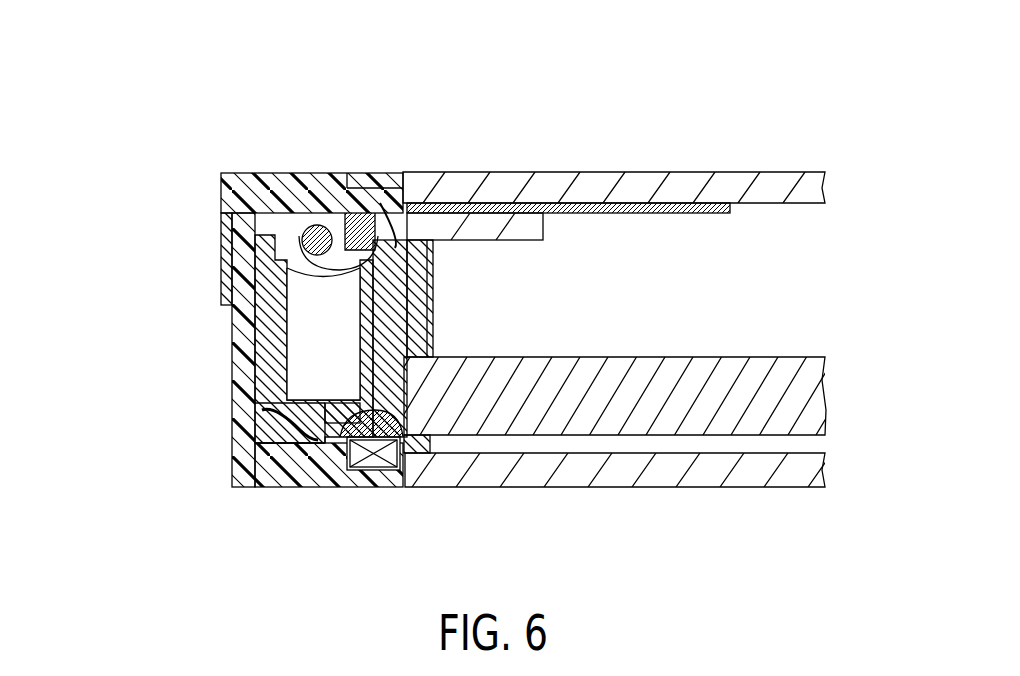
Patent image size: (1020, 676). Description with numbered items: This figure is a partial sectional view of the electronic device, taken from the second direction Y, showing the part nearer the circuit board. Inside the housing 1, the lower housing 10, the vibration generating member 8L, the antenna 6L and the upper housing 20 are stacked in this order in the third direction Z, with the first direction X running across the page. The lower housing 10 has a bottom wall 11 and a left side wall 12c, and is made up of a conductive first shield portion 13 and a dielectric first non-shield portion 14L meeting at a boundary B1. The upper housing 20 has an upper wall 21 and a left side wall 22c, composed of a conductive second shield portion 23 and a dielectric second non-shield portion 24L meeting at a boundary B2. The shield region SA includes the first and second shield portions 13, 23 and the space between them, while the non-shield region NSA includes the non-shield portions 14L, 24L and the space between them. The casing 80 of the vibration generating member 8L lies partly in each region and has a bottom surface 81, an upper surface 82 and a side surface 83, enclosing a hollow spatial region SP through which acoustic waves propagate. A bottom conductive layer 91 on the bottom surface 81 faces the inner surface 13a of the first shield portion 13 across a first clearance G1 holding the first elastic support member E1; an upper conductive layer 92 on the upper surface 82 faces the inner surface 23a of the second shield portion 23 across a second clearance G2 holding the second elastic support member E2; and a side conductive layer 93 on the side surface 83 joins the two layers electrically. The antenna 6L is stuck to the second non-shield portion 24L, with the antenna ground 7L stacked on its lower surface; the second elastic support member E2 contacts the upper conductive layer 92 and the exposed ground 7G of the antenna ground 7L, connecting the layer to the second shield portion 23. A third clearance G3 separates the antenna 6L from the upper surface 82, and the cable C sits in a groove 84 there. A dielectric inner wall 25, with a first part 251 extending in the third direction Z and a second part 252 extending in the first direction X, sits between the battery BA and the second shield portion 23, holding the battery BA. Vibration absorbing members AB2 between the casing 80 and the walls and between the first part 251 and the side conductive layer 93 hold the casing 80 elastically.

The housing 1 is at (162, 83).
The lower housing 10 is at (248, 525).
The bottom wall 11 is at (698, 505).
The side wall 12c is at (172, 402).
The first shield portion 13 is at (653, 478).
The inner surface of the first shield portion 13a is at (378, 452).
The first non-shield portion 14L is at (303, 482).
The upper housing 20 is at (233, 110).
The upper wall 21 is at (642, 140).
The side wall 22c is at (226, 242).
The second shield portion 23 is at (597, 178).
The inner surface of the second shield portion 23a is at (402, 222).
The second non-shield portion 24L is at (262, 176).
The inner wall 25 is at (558, 238).
The first part of the inner wall 251 is at (408, 274).
The second part of the inner wall 252 is at (528, 230).
The antenna 6L is at (265, 246).
The ground 7G is at (375, 210).
The antenna ground 7L is at (521, 206).
The casing 80 is at (270, 400).
The bottom surface 81 is at (325, 403).
The upper surface 82 is at (298, 238).
The side surface 83 is at (400, 378).
The groove 84 is at (312, 226).
The vibration generating member 8L is at (402, 372).
The bottom conductive layer 91 is at (368, 434).
The upper conductive layer 92 is at (358, 240).
The side conductive layer 93 is at (418, 340).
The vibration absorbing member AB2 is at (268, 416).
The boundary B1 is at (358, 532).
The boundary B2 is at (372, 150).
The battery BA is at (662, 362).
The cable C is at (326, 236).
The first elastic support member E1 is at (352, 448).
The second elastic support member E2 is at (412, 216).
The first clearance G1 is at (398, 405).
The second clearance G2 is at (400, 253).
The third clearance G3 is at (343, 244).
The non-shield region NSA is at (262, 330).
The shield region SA is at (685, 283).
The hollow spatial region SP is at (292, 340).
The first direction X is at (75, 568).
The second direction Y is at (71, 564).
The third direction Z is at (75, 568).